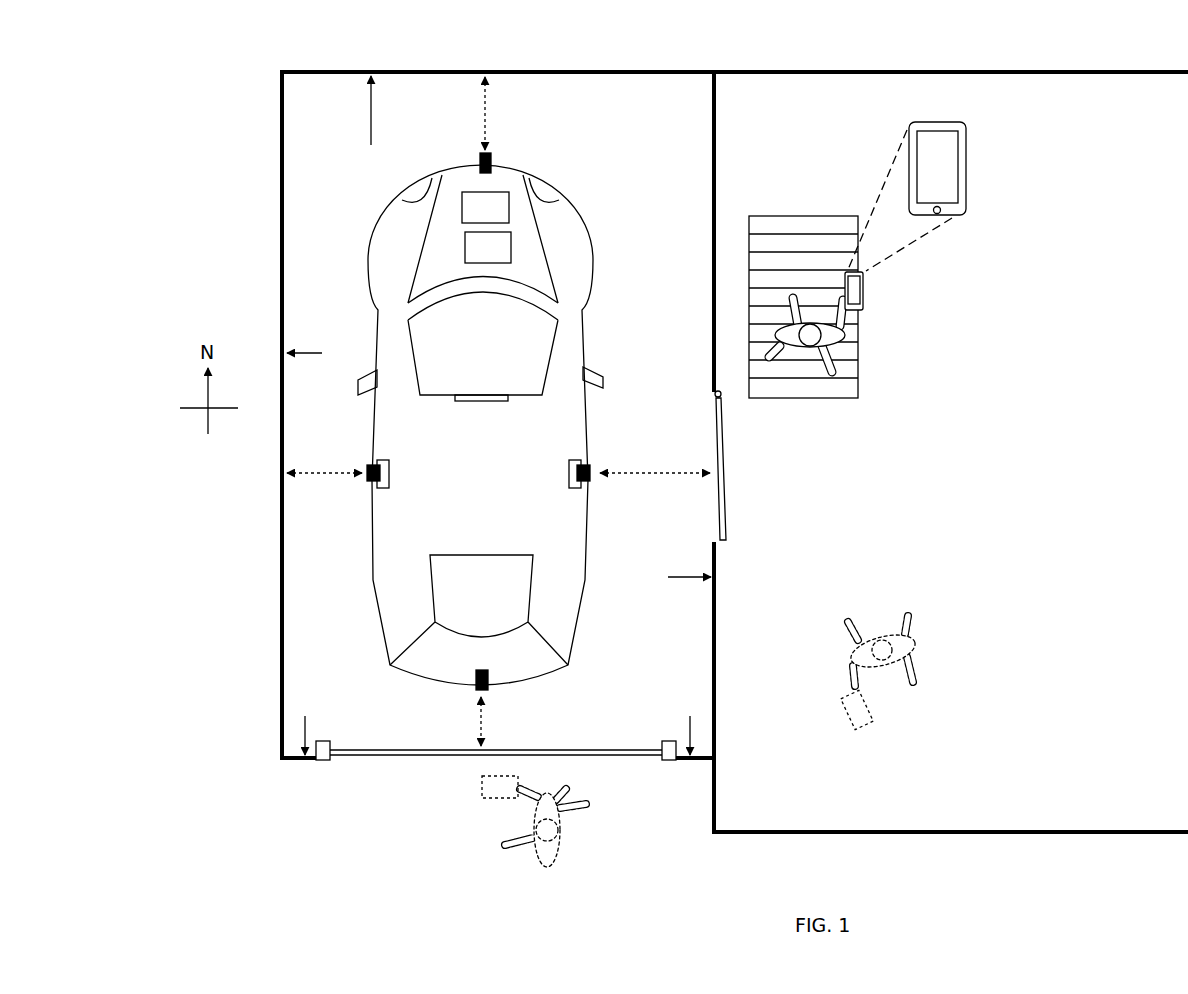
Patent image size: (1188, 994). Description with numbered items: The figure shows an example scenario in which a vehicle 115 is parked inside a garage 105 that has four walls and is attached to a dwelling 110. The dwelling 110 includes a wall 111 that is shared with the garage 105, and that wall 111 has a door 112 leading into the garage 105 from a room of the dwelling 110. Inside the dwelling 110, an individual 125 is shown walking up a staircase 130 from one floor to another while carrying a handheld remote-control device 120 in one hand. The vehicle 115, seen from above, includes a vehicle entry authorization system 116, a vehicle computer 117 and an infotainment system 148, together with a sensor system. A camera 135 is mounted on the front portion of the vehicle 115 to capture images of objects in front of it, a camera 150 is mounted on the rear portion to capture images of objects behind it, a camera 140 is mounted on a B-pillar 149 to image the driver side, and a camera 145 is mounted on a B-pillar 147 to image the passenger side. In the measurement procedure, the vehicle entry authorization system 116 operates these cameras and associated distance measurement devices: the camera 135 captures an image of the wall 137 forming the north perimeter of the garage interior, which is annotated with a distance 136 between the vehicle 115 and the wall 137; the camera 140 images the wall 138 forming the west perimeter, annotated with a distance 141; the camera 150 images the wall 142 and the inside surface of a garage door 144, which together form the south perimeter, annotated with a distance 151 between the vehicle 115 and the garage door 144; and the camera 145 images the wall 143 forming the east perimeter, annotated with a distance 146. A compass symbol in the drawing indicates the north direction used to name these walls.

The garage 105 is at (583, 72).
The dwelling 110 is at (835, 72).
The wall 111 is at (718, 185).
The door 112 is at (726, 497).
The vehicle 115 is at (608, 193).
The vehicle entry authorization system 116 is at (485, 207).
The vehicle computer 117 is at (488, 247).
The handheld remote-control device 120 is at (967, 163).
The individual 125 is at (852, 352).
The staircase 130 is at (817, 408).
The camera 135 is at (478, 160).
The distance 136 is at (488, 130).
The wall 137 is at (371, 110).
The wall 138 is at (322, 353).
The camera 140 is at (366, 466).
The distance 141 is at (343, 480).
The wall 142 is at (501, 722).
The wall 143 is at (669, 577).
The garage door 144 is at (600, 757).
The camera 145 is at (591, 466).
The distance 146 is at (628, 482).
The B-pillar 147 is at (567, 480).
The infotainment system 148 is at (488, 401).
The B-pillar 149 is at (391, 478).
The camera 150 is at (474, 687).
The distance 151 is at (486, 738).